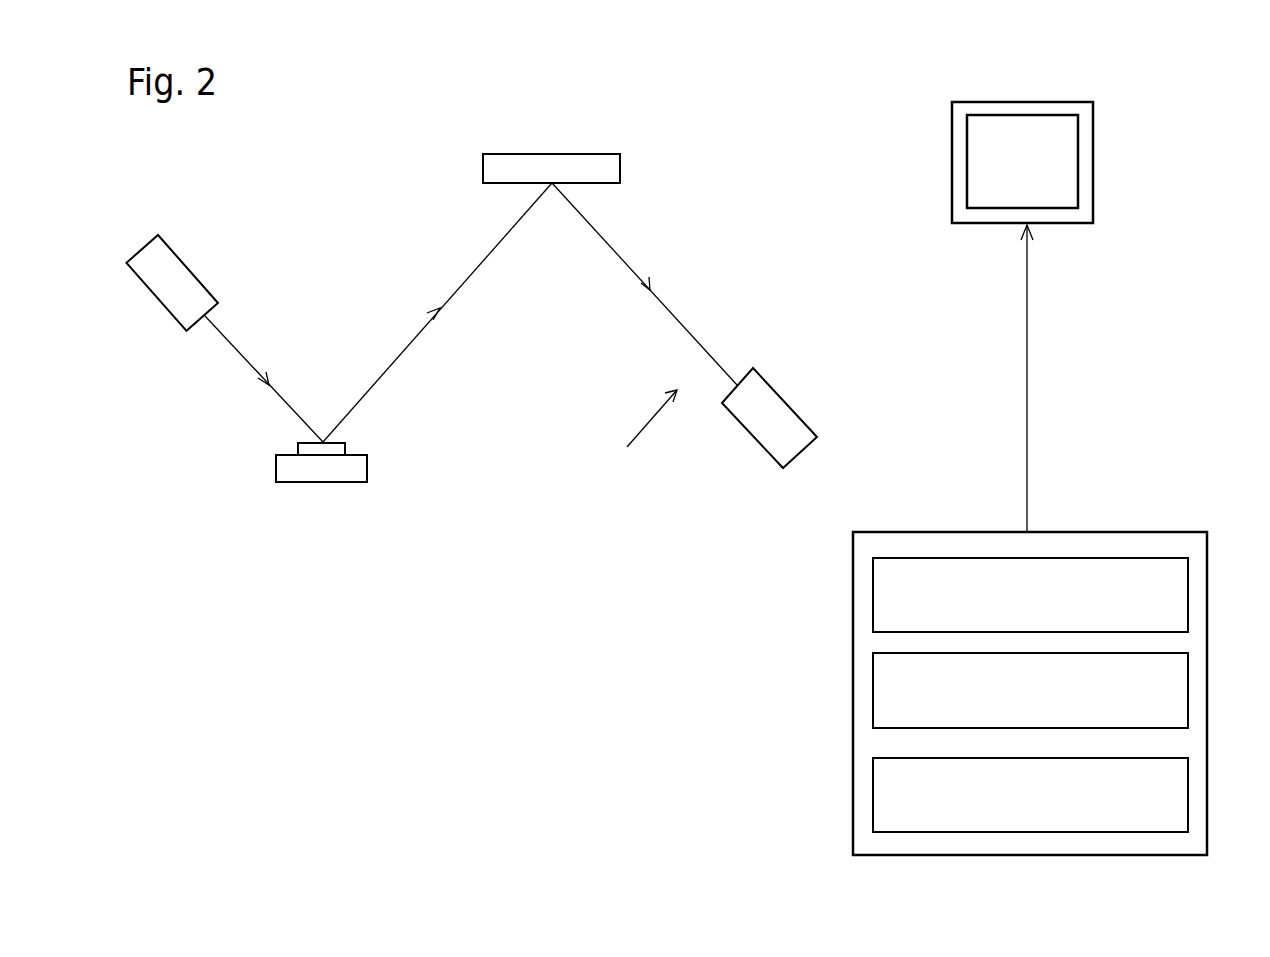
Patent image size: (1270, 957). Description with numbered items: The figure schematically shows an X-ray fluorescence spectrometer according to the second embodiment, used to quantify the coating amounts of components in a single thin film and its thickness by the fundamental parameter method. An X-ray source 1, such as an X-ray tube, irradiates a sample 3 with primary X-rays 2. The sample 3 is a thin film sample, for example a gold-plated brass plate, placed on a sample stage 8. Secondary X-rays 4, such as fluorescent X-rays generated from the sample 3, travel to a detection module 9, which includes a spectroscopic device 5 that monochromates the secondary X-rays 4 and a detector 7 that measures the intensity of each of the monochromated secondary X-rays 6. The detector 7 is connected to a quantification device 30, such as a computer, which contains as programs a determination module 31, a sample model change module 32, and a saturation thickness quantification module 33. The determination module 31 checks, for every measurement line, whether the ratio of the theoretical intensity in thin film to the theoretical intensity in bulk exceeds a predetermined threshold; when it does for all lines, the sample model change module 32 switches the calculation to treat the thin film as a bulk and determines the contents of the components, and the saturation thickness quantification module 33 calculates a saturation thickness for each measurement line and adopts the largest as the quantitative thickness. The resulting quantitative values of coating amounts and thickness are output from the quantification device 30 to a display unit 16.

The X-ray source 1 is at (187, 262).
The primary X-rays 2 is at (228, 340).
The sample 3 is at (345, 450).
The secondary X-rays 4 is at (460, 287).
The spectroscopic device 5 is at (622, 168).
The monochromated secondary X-rays 6 is at (688, 325).
The detector 7 is at (780, 395).
The sample stage 8 is at (367, 467).
The detection module 9 is at (640, 429).
The display unit 16 is at (1095, 168).
The quantification device 30 is at (888, 532).
The determination module 31 is at (872, 597).
The sample model change module 32 is at (872, 693).
The saturation thickness quantification module 33 is at (872, 797).